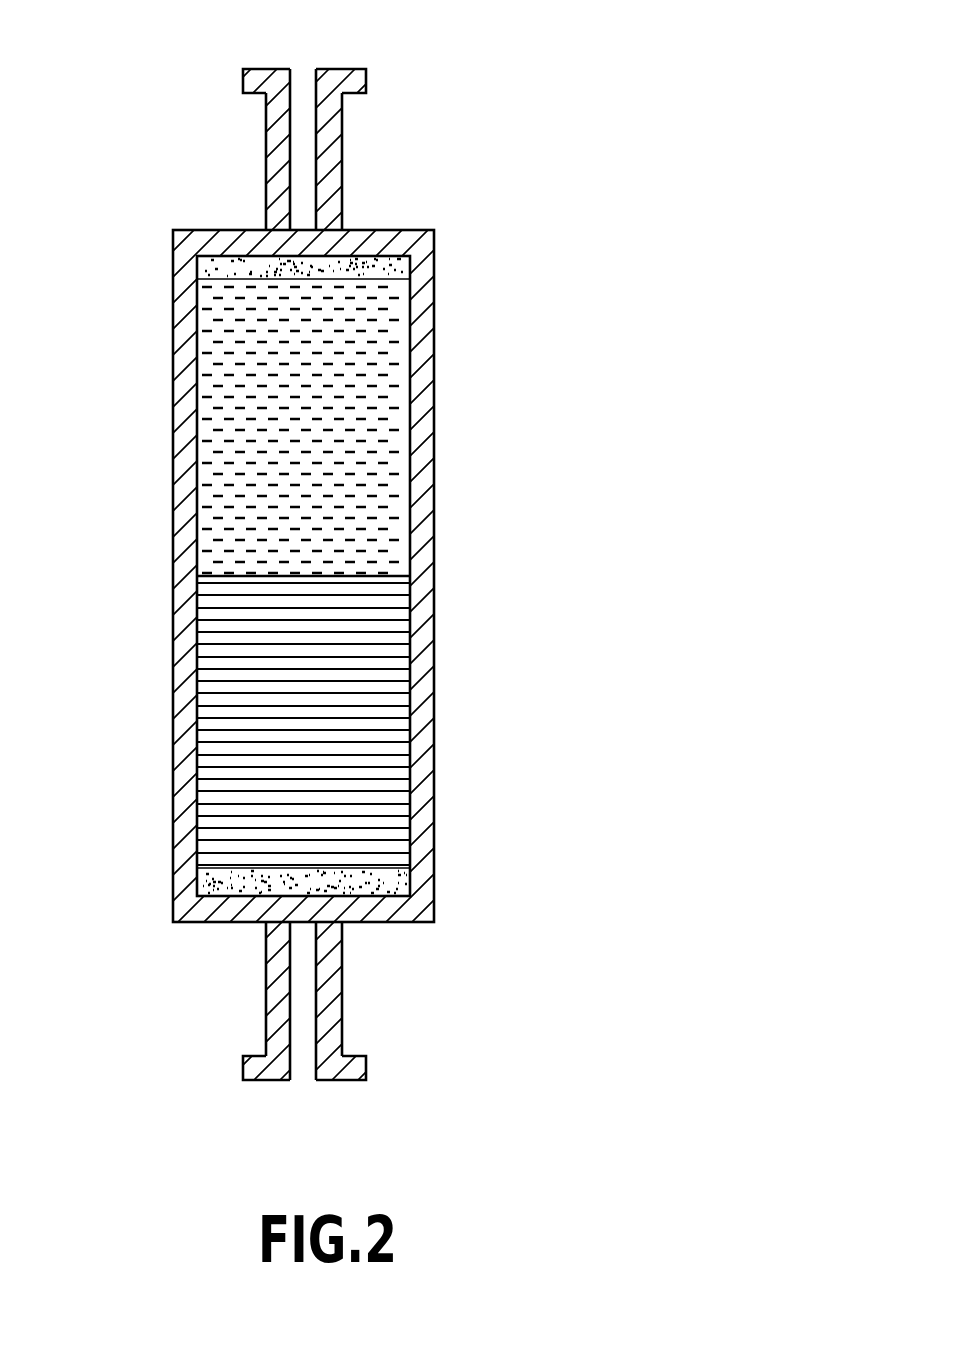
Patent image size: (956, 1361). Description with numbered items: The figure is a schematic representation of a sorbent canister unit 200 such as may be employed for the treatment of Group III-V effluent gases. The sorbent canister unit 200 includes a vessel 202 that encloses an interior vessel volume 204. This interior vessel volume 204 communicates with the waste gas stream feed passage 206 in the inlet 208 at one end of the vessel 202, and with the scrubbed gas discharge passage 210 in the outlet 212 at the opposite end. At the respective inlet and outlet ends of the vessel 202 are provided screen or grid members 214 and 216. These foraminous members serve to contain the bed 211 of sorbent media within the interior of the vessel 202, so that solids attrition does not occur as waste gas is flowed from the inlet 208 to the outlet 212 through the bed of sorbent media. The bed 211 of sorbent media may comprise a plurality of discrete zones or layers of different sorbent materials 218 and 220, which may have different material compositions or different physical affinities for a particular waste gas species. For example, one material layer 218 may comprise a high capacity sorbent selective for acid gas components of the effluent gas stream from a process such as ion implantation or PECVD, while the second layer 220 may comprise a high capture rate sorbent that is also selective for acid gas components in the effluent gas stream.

The sorbent canister unit 200 is at (522, 50).
The vessel 202 is at (410, 385).
The interior vessel volume 204 is at (383, 547).
The waste gas stream feed passage 206 is at (303, 1047).
The inlet 208 is at (245, 1065).
The scrubbed gas discharge passage 210 is at (302, 150).
The bed of sorbent media 211 is at (270, 525).
The outlet 212 is at (246, 82).
The screen or grid member 214 is at (267, 893).
The screen or grid member 216 is at (212, 270).
The sorbent material layer 218 is at (385, 753).
The sorbent material layer 220 is at (382, 497).